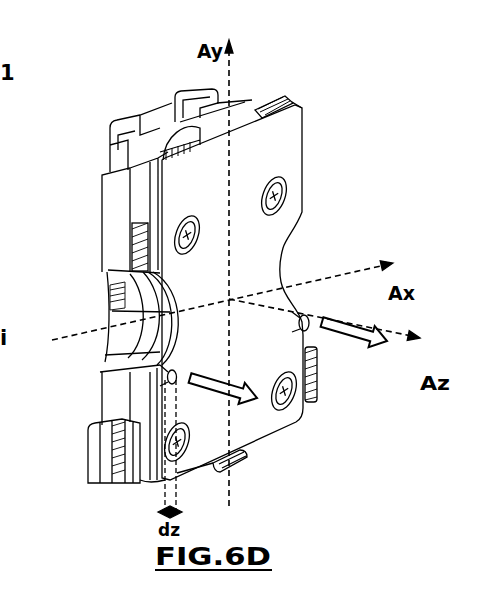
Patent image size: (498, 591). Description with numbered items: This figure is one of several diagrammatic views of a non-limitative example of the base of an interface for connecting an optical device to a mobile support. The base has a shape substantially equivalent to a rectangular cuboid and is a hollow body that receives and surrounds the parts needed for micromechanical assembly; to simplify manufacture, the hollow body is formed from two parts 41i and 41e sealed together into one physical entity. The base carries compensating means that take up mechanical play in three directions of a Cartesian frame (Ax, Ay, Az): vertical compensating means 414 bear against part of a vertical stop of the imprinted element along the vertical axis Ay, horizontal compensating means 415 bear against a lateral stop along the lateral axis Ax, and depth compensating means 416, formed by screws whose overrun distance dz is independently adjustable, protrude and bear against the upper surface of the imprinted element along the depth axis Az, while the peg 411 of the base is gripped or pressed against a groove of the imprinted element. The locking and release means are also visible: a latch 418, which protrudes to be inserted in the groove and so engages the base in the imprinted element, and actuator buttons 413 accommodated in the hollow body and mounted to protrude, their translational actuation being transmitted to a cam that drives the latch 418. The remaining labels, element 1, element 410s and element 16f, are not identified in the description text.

The device 1 is at (62, 139).
The peg 411 is at (224, 121).
The vertical compensating means 414 is at (172, 151).
The side face of housing 410s is at (290, 210).
The depth compensating means 416 is at (308, 320).
The part of the hollow body 41e is at (115, 205).
The horizontal compensating means 415 is at (140, 250).
The foot block 16f is at (93, 466).
The part of the hollow body 41i is at (150, 430).
The actuator buttons 413 is at (315, 385).
The latch 418 is at (228, 465).